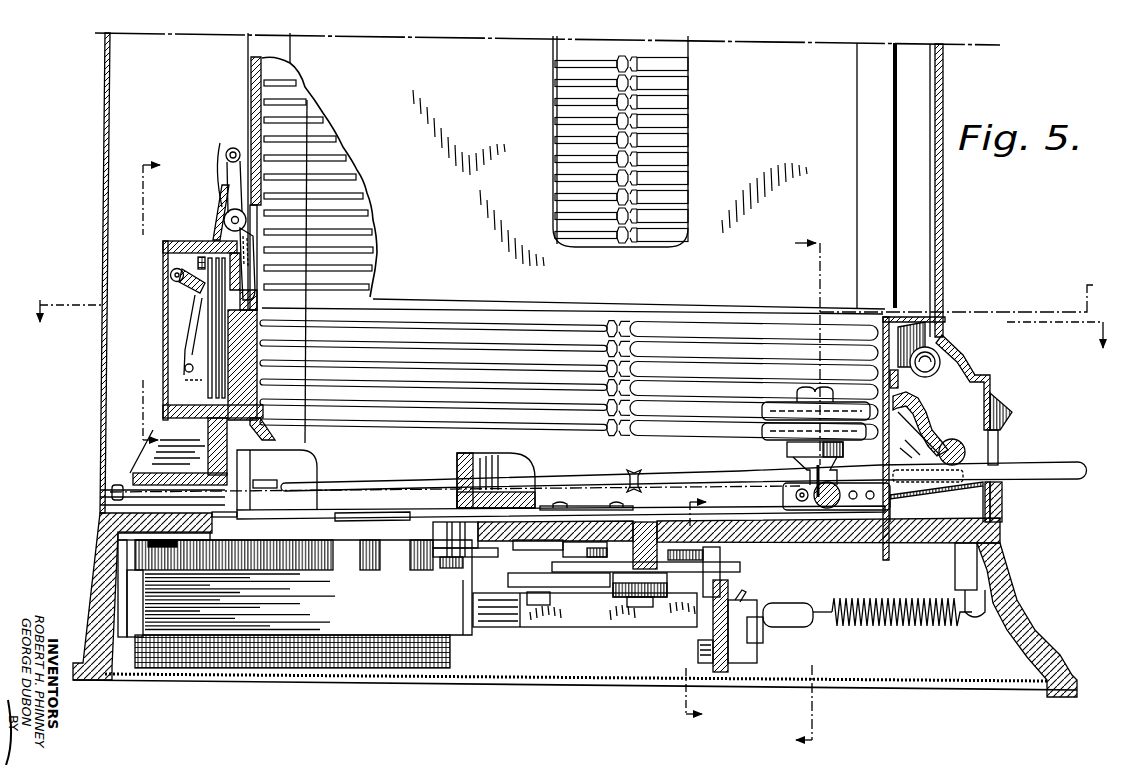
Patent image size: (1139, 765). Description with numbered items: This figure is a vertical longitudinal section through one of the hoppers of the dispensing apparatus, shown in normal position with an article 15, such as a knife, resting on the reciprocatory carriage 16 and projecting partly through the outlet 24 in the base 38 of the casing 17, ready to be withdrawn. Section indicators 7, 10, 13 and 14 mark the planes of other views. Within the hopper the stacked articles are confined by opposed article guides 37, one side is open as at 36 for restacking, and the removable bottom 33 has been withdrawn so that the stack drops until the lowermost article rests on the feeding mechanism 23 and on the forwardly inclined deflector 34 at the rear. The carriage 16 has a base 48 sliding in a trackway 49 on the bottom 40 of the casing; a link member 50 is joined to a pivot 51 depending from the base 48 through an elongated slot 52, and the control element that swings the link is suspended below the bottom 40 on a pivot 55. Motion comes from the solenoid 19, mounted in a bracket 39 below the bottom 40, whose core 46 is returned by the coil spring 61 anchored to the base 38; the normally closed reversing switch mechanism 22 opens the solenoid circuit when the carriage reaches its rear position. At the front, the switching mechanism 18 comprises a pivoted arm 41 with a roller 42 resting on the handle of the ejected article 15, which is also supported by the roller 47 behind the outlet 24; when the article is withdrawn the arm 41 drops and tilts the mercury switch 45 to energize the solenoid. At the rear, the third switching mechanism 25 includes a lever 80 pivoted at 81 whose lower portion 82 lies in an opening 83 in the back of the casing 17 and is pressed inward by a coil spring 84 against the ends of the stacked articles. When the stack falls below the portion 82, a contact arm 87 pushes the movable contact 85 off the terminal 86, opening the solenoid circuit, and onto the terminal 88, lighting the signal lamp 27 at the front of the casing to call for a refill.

The section line 7- 7 is at (568, 322).
The section line 10- 10 is at (708, 608).
The section line 13- 13 is at (792, 498).
The section line 14- 14 is at (130, 294).
The article 15 is at (645, 425).
The reciprocatory carriage 16 is at (455, 463).
The casing 17 is at (255, 108).
The switching mechanism 18 is at (950, 490).
The solenoid 19 is at (327, 652).
The reversing switch mechanism 22 is at (695, 652).
The feeding mechanism 23 is at (781, 444).
The outlet 24 is at (998, 443).
The third switching mechanism 25 is at (195, 302).
The lamp 27 is at (938, 357).
The removable bottom 33 is at (988, 308).
The forwardly inclined deflector 34 is at (278, 441).
The open side of hopper 36 is at (694, 182).
The article guides 37 is at (257, 60).
The base of casing 38 is at (1012, 610).
The bracket 39 is at (403, 628).
The bottom of casing 40 is at (888, 533).
The pivoted arm 41 is at (920, 428).
The roller 42 is at (955, 442).
The mercury switch 45 is at (982, 490).
The core 46 is at (585, 620).
The roller 47 is at (797, 503).
The base of carriage 48 is at (405, 510).
The trackway 49 is at (318, 512).
The link member 50 is at (495, 555).
The pivot 51 is at (396, 555).
The elongated slot 52 is at (245, 555).
The pivot 55 is at (650, 530).
The coil spring 61 is at (918, 628).
The lever 80 is at (226, 232).
The pivot 81 is at (222, 198).
The lower portion of lever 82 is at (252, 267).
The opening 83 is at (258, 233).
The coil spring 84 is at (231, 147).
The movable contact 85 is at (171, 277).
The terminal 86 is at (205, 241).
The contact arm 87 is at (166, 267).
The terminal 88 is at (176, 328).